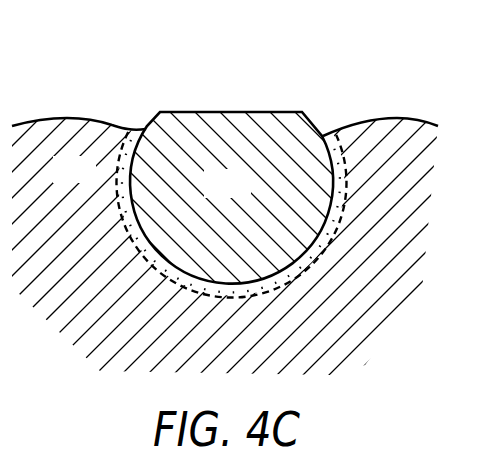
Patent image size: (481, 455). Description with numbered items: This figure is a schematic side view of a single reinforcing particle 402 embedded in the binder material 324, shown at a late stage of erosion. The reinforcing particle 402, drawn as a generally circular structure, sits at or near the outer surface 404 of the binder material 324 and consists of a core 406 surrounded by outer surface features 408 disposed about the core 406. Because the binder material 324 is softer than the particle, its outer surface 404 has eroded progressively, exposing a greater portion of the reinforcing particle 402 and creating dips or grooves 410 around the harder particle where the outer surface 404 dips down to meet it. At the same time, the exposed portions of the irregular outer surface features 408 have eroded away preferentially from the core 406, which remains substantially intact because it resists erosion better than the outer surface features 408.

The binder material 324 is at (93, 180).
The reinforcing particle 402 is at (240, 160).
The outer surface 404 is at (378, 117).
The core 406 is at (247, 195).
The outer surface features 408 is at (328, 130).
The grooves 410 is at (133, 130).